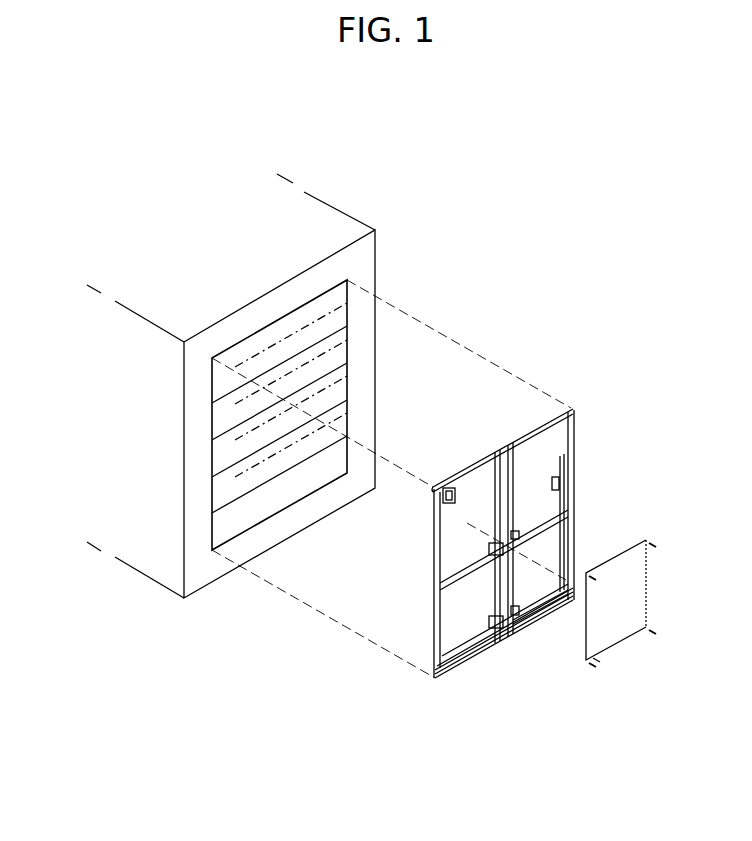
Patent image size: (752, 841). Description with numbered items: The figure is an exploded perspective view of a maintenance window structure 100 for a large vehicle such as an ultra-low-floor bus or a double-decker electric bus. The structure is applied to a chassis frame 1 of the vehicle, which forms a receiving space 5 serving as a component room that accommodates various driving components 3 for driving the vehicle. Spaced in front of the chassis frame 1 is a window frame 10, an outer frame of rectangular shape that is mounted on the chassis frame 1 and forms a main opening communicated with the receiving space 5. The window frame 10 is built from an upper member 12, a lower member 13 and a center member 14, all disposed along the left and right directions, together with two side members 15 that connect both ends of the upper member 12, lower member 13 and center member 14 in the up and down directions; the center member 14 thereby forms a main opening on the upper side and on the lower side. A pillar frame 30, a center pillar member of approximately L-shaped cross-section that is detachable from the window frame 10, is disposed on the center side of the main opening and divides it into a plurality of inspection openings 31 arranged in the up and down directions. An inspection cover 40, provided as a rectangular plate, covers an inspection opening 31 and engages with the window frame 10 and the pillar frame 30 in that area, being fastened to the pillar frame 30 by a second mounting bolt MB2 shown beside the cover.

The maintenance window structure 100 is at (364, 132).
The chassis frame 1 is at (329, 426).
The driving components 3 is at (225, 436).
The receiving space 5 is at (225, 461).
The window frame 10 is at (510, 562).
The upper member 12 is at (513, 442).
The lower member 13 is at (468, 650).
The center member 14 is at (470, 572).
The side members 15 is at (573, 477).
The pillar frame 30 is at (522, 502).
The inspection openings 31 is at (482, 488).
The inspection cover 40 is at (621, 638).
The second mounting bolt MB2 is at (598, 668).